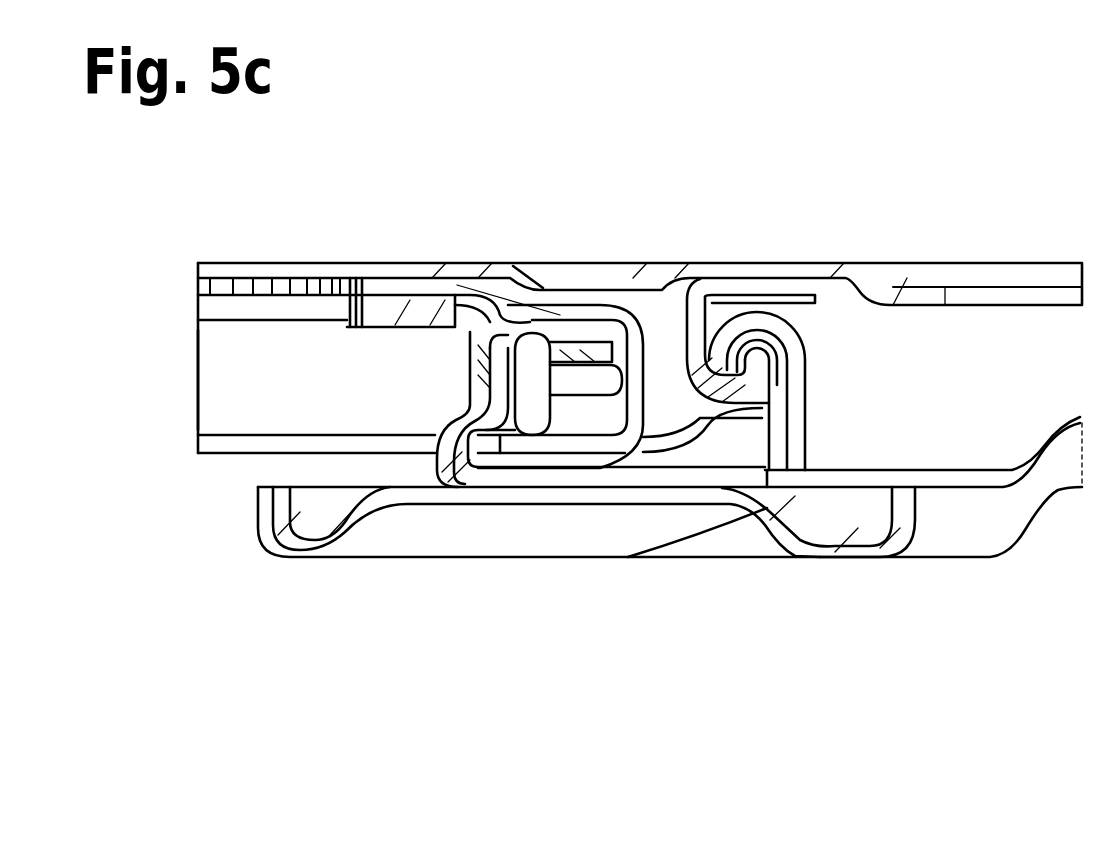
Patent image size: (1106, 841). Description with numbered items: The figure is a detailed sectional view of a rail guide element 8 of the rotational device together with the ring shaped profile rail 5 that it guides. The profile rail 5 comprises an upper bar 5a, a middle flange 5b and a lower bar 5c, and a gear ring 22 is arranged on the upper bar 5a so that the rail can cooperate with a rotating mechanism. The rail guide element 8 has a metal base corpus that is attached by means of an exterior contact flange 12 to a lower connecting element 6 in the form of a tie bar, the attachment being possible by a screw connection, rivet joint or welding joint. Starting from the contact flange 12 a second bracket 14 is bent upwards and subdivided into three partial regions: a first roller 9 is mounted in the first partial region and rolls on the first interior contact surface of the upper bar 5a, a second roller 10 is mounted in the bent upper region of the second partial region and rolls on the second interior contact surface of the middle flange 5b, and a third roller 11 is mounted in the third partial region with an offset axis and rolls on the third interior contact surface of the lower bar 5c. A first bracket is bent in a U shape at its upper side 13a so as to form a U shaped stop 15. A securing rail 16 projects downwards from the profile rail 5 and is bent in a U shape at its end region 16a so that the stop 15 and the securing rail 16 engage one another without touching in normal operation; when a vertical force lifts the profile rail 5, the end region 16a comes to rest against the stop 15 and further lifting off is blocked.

The ring shaped profile rail 5 is at (385, 290).
The upper bar 5a is at (308, 342).
The middle flange 5b is at (241, 386).
The lower bar 5c is at (250, 440).
The gear ring 22 is at (244, 290).
The first roller 9 is at (508, 326).
The second roller 10 is at (588, 383).
The third roller 11 is at (532, 410).
The second bracket 14 is at (450, 462).
The securing rail 16 is at (712, 292).
The end region 16a is at (718, 400).
The U shaped stop 15 is at (805, 390).
The upper side 13a is at (820, 341).
The rail guide element 8 is at (765, 486).
The lower connecting element 6 is at (285, 548).
The contact flange 12 is at (683, 475).